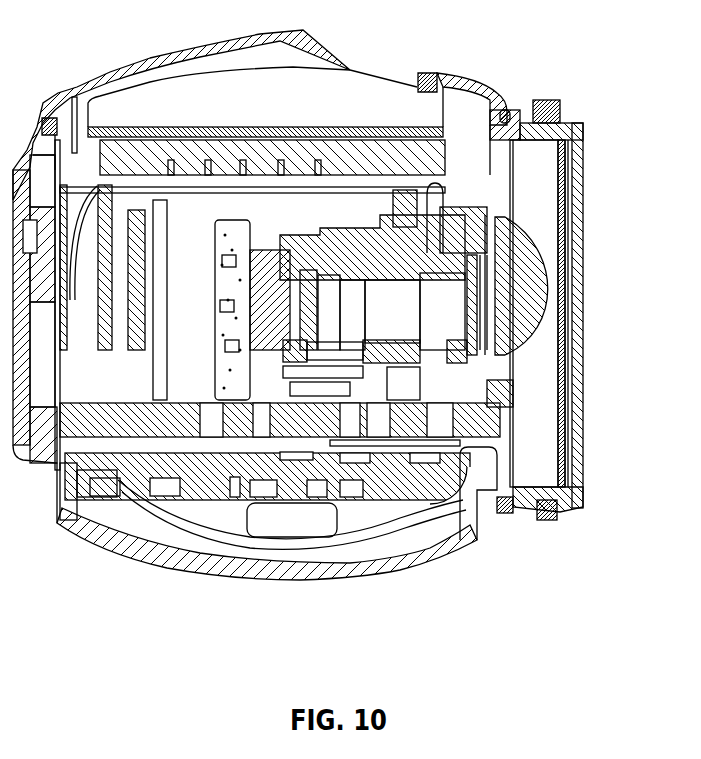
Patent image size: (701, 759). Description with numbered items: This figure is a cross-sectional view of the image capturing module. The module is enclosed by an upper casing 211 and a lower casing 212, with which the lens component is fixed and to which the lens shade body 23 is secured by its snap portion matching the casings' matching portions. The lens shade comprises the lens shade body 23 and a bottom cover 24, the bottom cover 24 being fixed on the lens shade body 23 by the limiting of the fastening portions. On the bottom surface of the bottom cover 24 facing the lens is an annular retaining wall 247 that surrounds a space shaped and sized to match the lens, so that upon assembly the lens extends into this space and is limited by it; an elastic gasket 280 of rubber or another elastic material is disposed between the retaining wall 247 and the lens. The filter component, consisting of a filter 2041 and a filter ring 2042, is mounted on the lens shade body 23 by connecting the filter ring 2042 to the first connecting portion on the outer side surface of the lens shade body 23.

The upper casing 211 is at (143, 57).
The lower casing 212 is at (270, 575).
The lens shade body 23 is at (523, 110).
The retaining wall 247 is at (512, 157).
The filter 2041 is at (563, 208).
The elastic gasket 280 is at (512, 207).
The bottom cover 24 is at (585, 480).
The filter ring 2042 is at (557, 515).